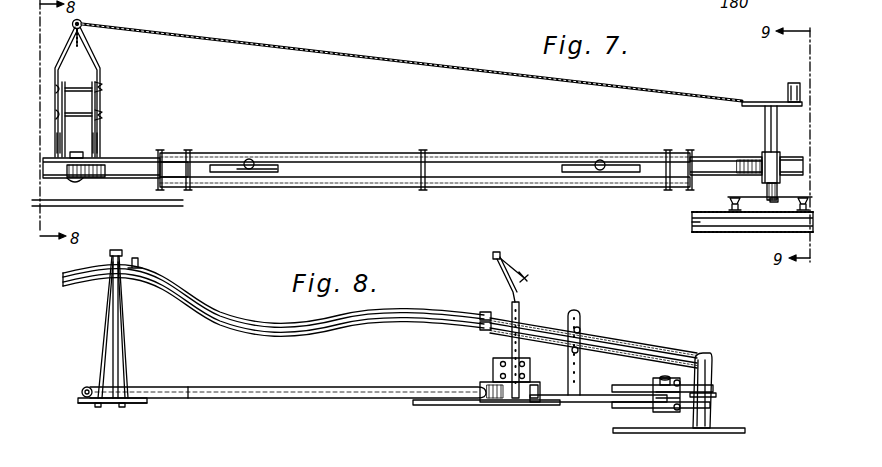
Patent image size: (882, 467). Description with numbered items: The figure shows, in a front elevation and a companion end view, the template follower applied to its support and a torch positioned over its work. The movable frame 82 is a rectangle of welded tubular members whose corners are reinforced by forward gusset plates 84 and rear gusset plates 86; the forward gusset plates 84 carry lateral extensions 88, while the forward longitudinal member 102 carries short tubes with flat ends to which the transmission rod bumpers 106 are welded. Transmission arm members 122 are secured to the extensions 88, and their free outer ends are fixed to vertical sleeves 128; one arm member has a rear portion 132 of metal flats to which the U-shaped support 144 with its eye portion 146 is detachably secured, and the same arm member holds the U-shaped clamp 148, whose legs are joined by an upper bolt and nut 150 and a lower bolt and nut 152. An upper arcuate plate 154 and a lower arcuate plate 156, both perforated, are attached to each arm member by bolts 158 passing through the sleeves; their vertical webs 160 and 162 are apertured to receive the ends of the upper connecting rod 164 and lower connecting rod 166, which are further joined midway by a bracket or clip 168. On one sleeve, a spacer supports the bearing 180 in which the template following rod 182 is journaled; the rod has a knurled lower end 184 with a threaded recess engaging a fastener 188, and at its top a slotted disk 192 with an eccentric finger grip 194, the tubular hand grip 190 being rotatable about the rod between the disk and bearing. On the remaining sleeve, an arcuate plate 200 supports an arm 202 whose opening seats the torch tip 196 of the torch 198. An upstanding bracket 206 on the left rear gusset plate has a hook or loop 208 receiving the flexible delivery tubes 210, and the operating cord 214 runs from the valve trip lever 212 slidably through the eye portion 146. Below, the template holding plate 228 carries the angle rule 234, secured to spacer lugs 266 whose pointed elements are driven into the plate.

In FIG. 8, the movable frame 82 is at (325, 398).
In FIG. 8, the forward gusset plates 84 is at (425, 405).
In FIG. 8, the rear gusset plates 86 is at (141, 404).
In FIG. 8, the extensions 88 is at (502, 403).
In FIG. 7, the forward longitudinal member 102 is at (268, 172).
In FIG. 7, the transmission rod bumpers 106 is at (252, 160).
In FIG. 8, the transmission arm members 122 is at (580, 402).
In FIG. 8, the sleeves 128 is at (659, 404).
In FIG. 8, the rear portion 132 is at (493, 368).
In FIG. 7, the U-shaped support 144 is at (100, 69).
In FIG. 8, the U-shaped support 144 is at (505, 289).
In FIG. 7, the eye portion 146 is at (84, 26).
In FIG. 8, the eye portion 146 is at (501, 253).
In FIG. 7, the U-shaped clamp 148 is at (62, 102).
In FIG. 8, the U-shaped clamp 148 is at (581, 313).
In FIG. 7, the upper bolt and nut 150 is at (103, 88).
In FIG. 8, the upper bolt and nut 150 is at (581, 330).
In FIG. 7, the lower bolt and nut 152 is at (101, 114).
In FIG. 8, the lower bolt and nut 152 is at (578, 352).
In FIG. 7, the upper arcuate plate 154 is at (132, 158).
In FIG. 8, the upper arcuate plate 154 is at (628, 383).
In FIG. 7, the lower arcuate plate 156 is at (108, 177).
In FIG. 8, the lower arcuate plate 156 is at (628, 406).
In FIG. 8, the bolts 158 is at (664, 377).
In FIG. 7, the upper vertical web 160 is at (160, 150).
In FIG. 7, the lower vertical web 162 is at (190, 150).
In FIG. 7, the upper connecting rod 164 is at (462, 157).
In FIG. 7, the lower connecting rod 166 is at (470, 187).
In FIG. 7, the bracket or clip 168 is at (421, 153).
In FIG. 7, the bearing 180 is at (762, 157).
In FIG. 7, the template following rod 182 is at (779, 188).
In FIG. 7, the knurled lower end 184 is at (771, 200).
In FIG. 7, the fastener 188 is at (776, 203).
In FIG. 7, the tubular hand grip 190 is at (777, 141).
In FIG. 7, the slotted disk 192 is at (770, 102).
In FIG. 7, the finger grip 194 is at (793, 88).
In FIG. 8, the finger grip 194 is at (110, 466).
In FIG. 8, the torch tip 196 is at (711, 416).
In FIG. 8, the torch 198 is at (530, 323).
In FIG. 8, the arcuate plate 200 is at (673, 402).
In FIG. 8, the arm 202 is at (716, 397).
In FIG. 8, the upstanding bracket 206 is at (124, 364).
In FIG. 8, the hook or loop 208 is at (139, 267).
In FIG. 8, the flexible delivery tubes 210 is at (292, 333).
In FIG. 8, the valve trip lever 212 is at (508, 347).
In FIG. 7, the operating cord 214 is at (517, 77).
In FIG. 8, the operating cord 214 is at (524, 275).
In FIG. 7, the template holding plate 228 is at (703, 230).
In FIG. 7, the angle rule 234 is at (766, 189).
In FIG. 7, the spacer blocks or lugs 266 is at (731, 204).